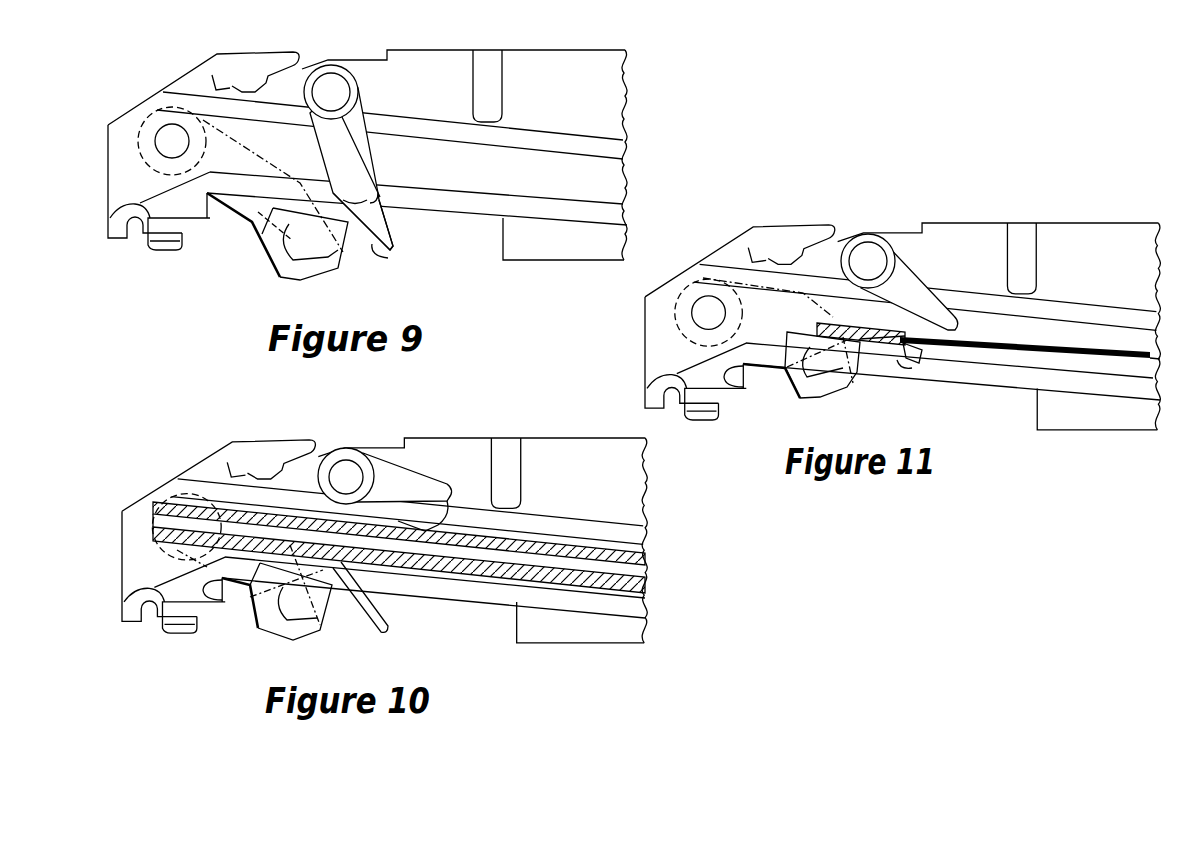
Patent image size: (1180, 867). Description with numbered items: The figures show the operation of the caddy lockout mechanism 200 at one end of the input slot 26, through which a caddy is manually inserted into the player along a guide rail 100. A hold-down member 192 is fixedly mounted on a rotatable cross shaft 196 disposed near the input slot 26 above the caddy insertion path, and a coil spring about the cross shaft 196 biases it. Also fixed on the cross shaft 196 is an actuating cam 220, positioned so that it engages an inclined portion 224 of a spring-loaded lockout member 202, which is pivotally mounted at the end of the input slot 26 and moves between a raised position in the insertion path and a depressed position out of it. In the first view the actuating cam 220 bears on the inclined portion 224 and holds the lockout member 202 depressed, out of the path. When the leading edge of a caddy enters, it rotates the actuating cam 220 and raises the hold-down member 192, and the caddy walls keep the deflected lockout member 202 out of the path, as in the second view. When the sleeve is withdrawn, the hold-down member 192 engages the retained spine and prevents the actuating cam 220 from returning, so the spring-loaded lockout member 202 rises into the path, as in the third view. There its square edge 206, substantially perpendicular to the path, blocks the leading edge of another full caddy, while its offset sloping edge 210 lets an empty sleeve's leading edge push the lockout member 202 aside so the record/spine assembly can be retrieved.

In FIG. 9, the input slot 26 is at (125, 163).
In FIG. 10, the input slot 26 is at (133, 559).
In FIG. 11, the input slot 26 is at (656, 341).
In FIG. 9, the guide rail 100 is at (613, 189).
In FIG. 10, the guide rail 100 is at (496, 583).
In FIG. 11, the guide rail 100 is at (1017, 358).
In FIG. 9, the hold-down member 192 is at (381, 208).
In FIG. 10, the hold-down member 192 is at (451, 485).
In FIG. 11, the hold-down member 192 is at (951, 320).
In FIG. 9, the cross shaft 196 is at (333, 88).
In FIG. 10, the cross shaft 196 is at (347, 476).
In FIG. 11, the cross shaft 196 is at (868, 260).
In FIG. 9, the caddy lockout mechanism 200 is at (129, 79).
In FIG. 10, the caddy lockout mechanism 200 is at (146, 467).
In FIG. 11, the caddy lockout mechanism 200 is at (786, 203).
In FIG. 9, the lockout member 202 is at (280, 278).
In FIG. 10, the lockout member 202 is at (267, 634).
In FIG. 11, the lockout member 202 is at (800, 399).
In FIG. 9, the square edge 206 is at (260, 237).
In FIG. 10, the square edge 206 is at (247, 582).
In FIG. 11, the square edge 206 is at (785, 343).
In FIG. 9, the sloping edge 210 is at (283, 246).
In FIG. 10, the sloping edge 210 is at (285, 594).
In FIG. 11, the sloping edge 210 is at (820, 386).
In FIG. 9, the actuating cam 220 is at (393, 249).
In FIG. 10, the actuating cam 220 is at (420, 522).
In FIG. 11, the actuating cam 220 is at (930, 349).
In FIG. 9, the inclined portion 224 is at (372, 246).
In FIG. 10, the inclined portion 224 is at (385, 629).
In FIG. 11, the inclined portion 224 is at (903, 364).